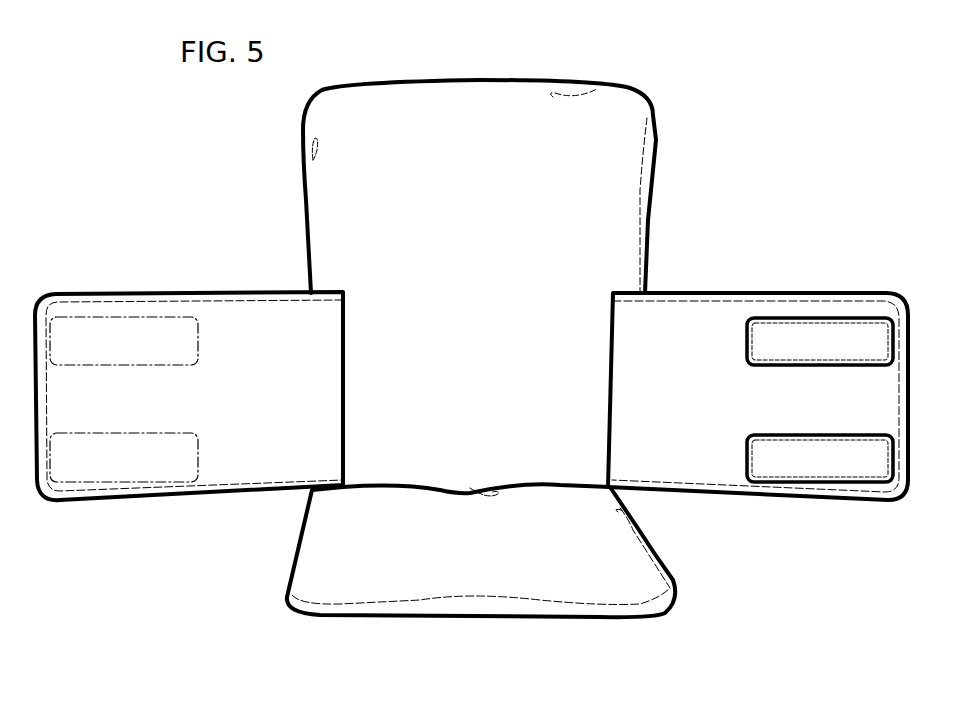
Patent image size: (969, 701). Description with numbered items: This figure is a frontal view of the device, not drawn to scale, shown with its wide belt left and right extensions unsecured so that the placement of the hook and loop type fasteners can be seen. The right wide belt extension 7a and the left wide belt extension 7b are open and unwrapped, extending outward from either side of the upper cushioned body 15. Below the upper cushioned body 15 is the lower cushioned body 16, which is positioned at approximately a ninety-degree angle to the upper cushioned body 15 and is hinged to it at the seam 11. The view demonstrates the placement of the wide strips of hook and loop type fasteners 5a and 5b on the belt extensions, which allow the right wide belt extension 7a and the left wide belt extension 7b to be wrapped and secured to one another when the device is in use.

The upper cushioned body 15 is at (353, 192).
The lower cushioned body 16 is at (623, 565).
The right wide belt extension 7a is at (690, 457).
The left wide belt extension 7b is at (240, 338).
The hook and loop type fasteners 5a is at (807, 337).
The hook and loop type fasteners 5b is at (110, 338).
The seam 11 is at (387, 485).